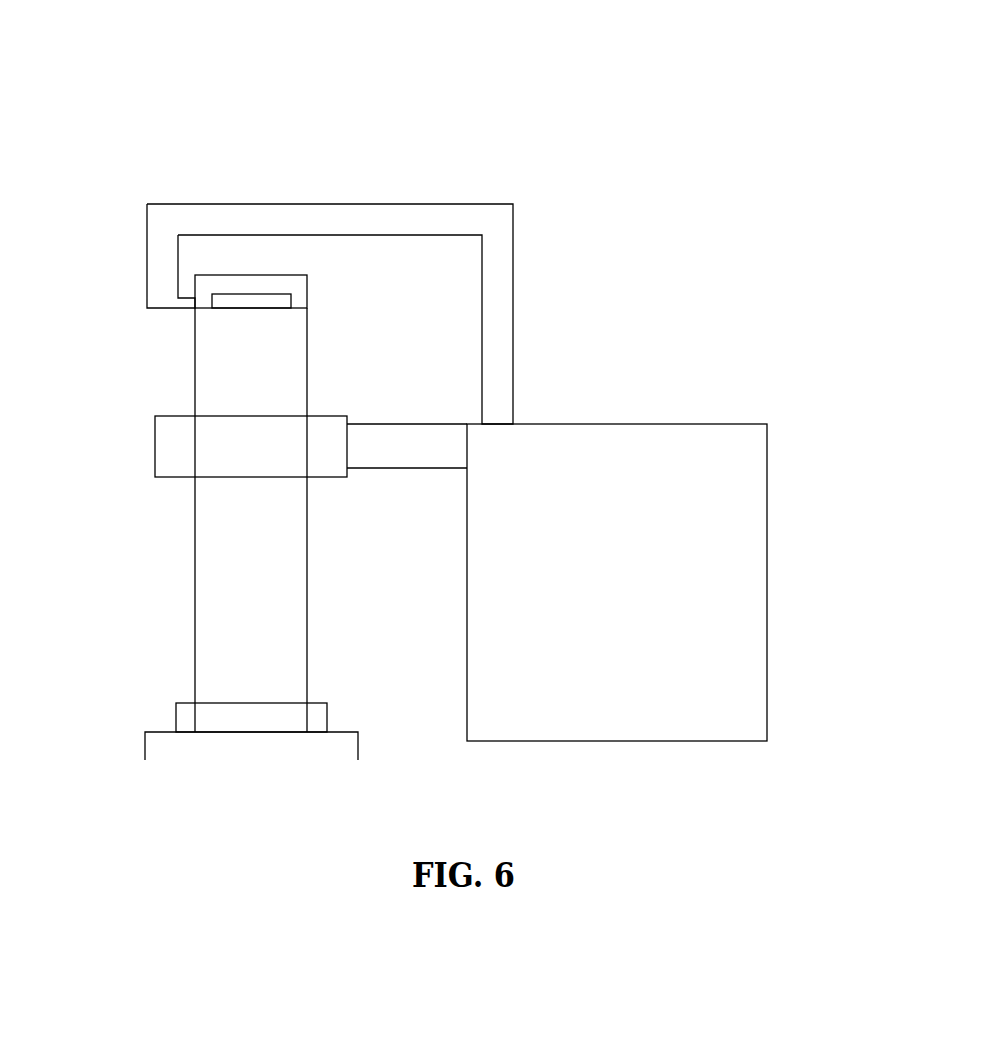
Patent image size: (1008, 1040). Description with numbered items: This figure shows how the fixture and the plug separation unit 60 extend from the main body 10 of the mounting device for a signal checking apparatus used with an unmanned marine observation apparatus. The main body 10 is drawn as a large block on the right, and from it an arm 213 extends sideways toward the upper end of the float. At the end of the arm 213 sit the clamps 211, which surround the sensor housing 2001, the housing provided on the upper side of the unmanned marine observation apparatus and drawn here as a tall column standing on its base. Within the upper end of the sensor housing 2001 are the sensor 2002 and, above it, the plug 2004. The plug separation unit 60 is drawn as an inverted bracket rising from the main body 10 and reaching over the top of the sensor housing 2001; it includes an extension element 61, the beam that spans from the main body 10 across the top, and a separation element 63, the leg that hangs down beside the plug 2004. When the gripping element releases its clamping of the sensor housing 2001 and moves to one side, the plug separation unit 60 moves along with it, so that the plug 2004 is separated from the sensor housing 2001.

The main body 10 is at (782, 697).
The plug separation unit 60 is at (433, 57).
The extension element 61 is at (359, 218).
The separation element 63 is at (165, 268).
The clamps 211 is at (186, 450).
The arm 213 is at (405, 452).
The sensor housing 2001 is at (228, 580).
The sensor 2002 is at (285, 300).
The plug 2004 is at (297, 283).